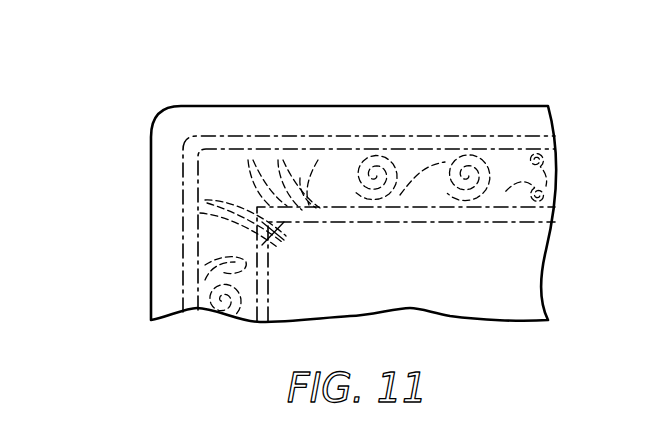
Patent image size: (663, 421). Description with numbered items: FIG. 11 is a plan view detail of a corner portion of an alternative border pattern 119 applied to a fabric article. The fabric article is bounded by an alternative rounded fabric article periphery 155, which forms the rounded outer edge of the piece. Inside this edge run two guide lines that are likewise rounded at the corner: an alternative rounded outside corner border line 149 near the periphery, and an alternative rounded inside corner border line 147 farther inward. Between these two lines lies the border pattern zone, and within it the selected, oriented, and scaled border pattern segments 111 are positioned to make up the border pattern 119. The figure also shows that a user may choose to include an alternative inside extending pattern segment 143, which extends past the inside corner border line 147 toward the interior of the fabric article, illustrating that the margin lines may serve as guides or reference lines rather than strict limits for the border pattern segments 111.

The rounded fabric article periphery 155 is at (163, 114).
The rounded outside corner border line 149 is at (191, 140).
The border pattern segments 111 is at (335, 157).
The border pattern 119 is at (437, 167).
The inside extending pattern segment 143 is at (212, 204).
The rounded inside corner border line 147 is at (272, 228).